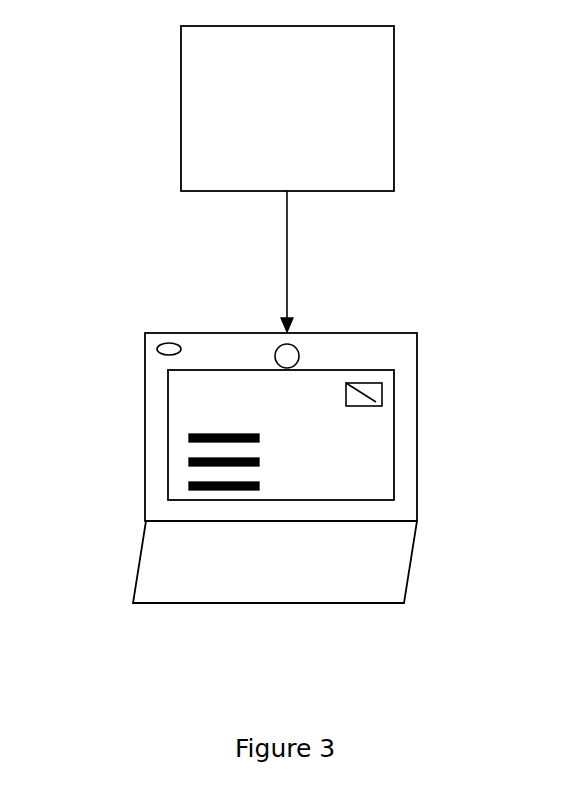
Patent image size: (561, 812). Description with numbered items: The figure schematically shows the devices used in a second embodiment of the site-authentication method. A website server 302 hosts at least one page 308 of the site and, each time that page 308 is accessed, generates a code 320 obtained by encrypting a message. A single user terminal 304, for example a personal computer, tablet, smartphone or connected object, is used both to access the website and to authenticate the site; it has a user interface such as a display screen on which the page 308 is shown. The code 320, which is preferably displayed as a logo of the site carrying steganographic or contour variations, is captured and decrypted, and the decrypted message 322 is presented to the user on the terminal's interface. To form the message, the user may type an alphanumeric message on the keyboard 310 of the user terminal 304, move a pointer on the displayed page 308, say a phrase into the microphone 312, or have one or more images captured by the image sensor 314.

The website server 302 is at (381, 85).
The user terminal 304 is at (158, 497).
The page 308 is at (380, 480).
The keyboard 310 is at (392, 583).
The microphone 312 is at (168, 352).
The image sensor 314 is at (288, 350).
The code 320 is at (373, 387).
The decrypted message 322 is at (202, 457).